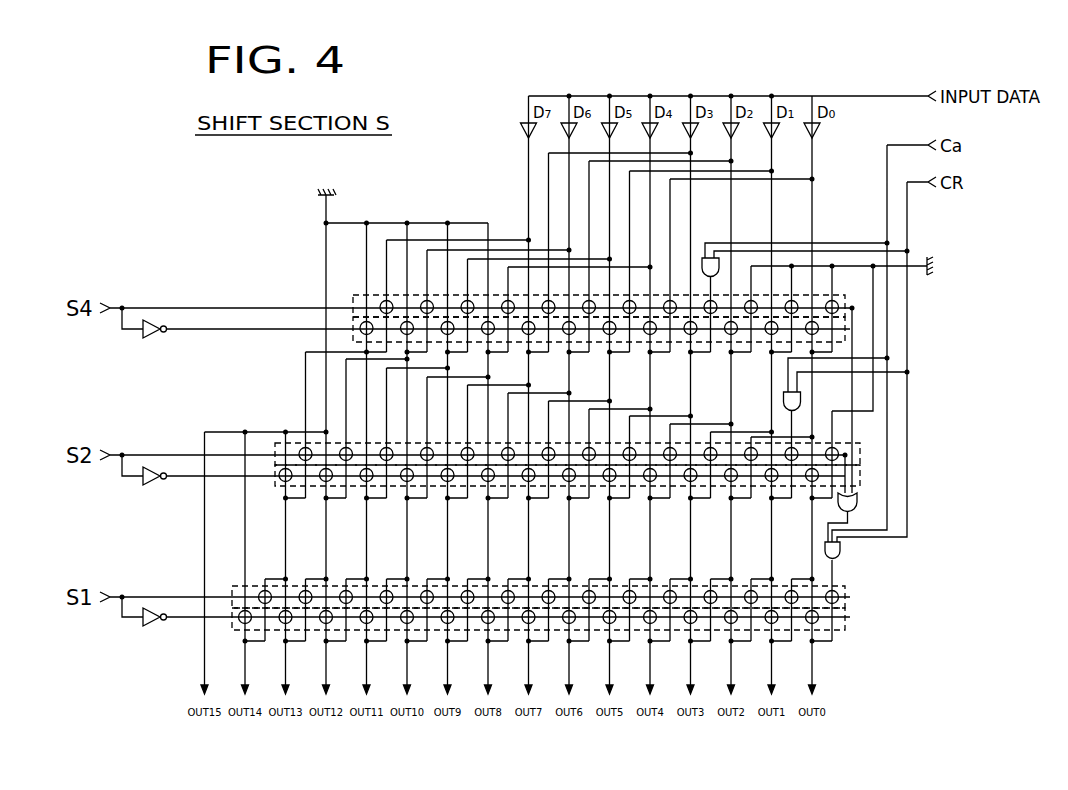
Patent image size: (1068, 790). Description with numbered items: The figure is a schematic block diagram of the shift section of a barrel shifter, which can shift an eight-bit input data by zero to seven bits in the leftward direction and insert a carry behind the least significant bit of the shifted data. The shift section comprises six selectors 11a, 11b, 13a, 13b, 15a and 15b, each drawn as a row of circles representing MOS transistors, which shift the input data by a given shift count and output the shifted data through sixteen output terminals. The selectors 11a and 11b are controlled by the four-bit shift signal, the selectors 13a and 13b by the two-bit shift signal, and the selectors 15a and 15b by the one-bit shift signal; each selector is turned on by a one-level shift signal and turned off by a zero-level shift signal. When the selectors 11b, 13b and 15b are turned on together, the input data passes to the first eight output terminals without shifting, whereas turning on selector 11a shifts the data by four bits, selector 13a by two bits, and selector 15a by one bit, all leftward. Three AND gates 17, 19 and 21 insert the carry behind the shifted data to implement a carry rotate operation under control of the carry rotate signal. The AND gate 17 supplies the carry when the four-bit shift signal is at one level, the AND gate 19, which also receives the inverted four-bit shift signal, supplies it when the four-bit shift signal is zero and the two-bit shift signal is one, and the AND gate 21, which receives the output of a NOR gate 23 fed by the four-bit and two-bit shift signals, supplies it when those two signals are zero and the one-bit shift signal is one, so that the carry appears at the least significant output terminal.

The selector 11a is at (353, 296).
The selector 11b is at (353, 339).
The selector 13a is at (278, 443).
The selector 13b is at (278, 486).
The selector 15a is at (232, 586).
The selector 15b is at (232, 630).
The AND gate 17 is at (704, 257).
The AND gate 19 is at (784, 412).
The AND gate 21 is at (840, 553).
The NOR gate 23 is at (856, 502).